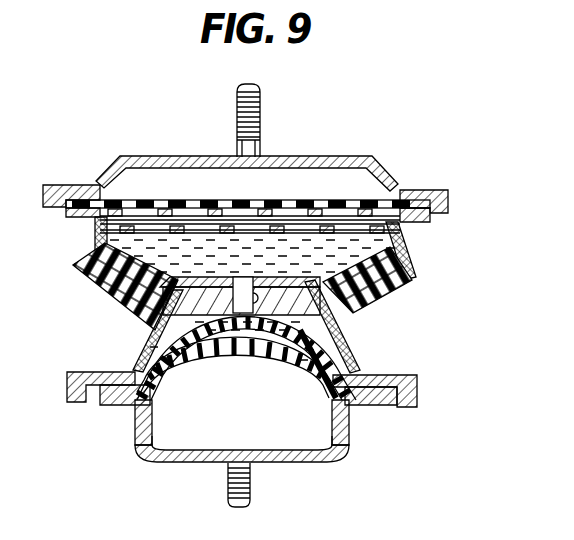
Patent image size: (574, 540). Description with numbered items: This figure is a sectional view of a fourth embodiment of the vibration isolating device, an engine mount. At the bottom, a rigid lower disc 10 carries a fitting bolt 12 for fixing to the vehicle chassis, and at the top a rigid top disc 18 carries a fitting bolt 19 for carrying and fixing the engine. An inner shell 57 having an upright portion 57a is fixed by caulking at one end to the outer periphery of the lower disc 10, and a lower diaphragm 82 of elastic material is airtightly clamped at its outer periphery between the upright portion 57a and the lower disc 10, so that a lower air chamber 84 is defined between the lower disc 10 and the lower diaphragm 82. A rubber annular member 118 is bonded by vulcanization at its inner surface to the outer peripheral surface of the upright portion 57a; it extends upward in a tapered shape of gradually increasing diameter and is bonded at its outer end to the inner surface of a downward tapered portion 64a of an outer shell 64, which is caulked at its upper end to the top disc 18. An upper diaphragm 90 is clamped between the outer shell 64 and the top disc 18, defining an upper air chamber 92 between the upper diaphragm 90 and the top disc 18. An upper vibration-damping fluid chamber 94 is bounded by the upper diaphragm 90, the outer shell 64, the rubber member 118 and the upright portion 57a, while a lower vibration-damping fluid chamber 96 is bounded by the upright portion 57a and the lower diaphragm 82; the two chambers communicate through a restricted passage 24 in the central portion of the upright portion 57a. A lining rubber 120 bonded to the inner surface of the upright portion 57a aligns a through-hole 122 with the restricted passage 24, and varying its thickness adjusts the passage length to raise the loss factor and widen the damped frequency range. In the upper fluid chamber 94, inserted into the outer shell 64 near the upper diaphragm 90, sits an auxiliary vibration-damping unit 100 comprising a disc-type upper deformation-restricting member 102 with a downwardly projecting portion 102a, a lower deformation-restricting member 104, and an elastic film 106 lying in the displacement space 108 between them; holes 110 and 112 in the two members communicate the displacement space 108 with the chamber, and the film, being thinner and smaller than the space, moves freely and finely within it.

The lower disc 10 is at (305, 463).
The fitting bolt 12 is at (250, 493).
The top disc 18 is at (292, 160).
The fitting bolt 19 is at (262, 102).
The restricted passage 24 is at (135, 288).
The inner shell 57 is at (398, 376).
The upright portion 57a is at (145, 332).
The outer shell 64 is at (95, 230).
The downward tapered portion 64a is at (420, 274).
The lower diaphragm 82 is at (170, 400).
The lower air chamber 84 is at (303, 430).
The upper diaphragm 90 is at (312, 208).
The upper air chamber 92 is at (358, 200).
The upper vibration-damping fluid chamber 94 is at (385, 253).
The lower vibration-damping fluid chamber 96 is at (345, 352).
The auxiliary vibration-damping unit 100 is at (88, 250).
The upper deformation-restricting member 102 is at (100, 180).
The downwardly projecting portion 102a is at (395, 192).
The lower deformation-restricting member 104 is at (412, 228).
The elastic film 106 is at (350, 190).
The displacement space 108 is at (172, 235).
The holes 110 is at (132, 220).
The holes 112 is at (203, 228).
The rubber annular member 118 is at (415, 290).
The lining rubber 120 is at (133, 347).
The through-hole 122 is at (352, 327).